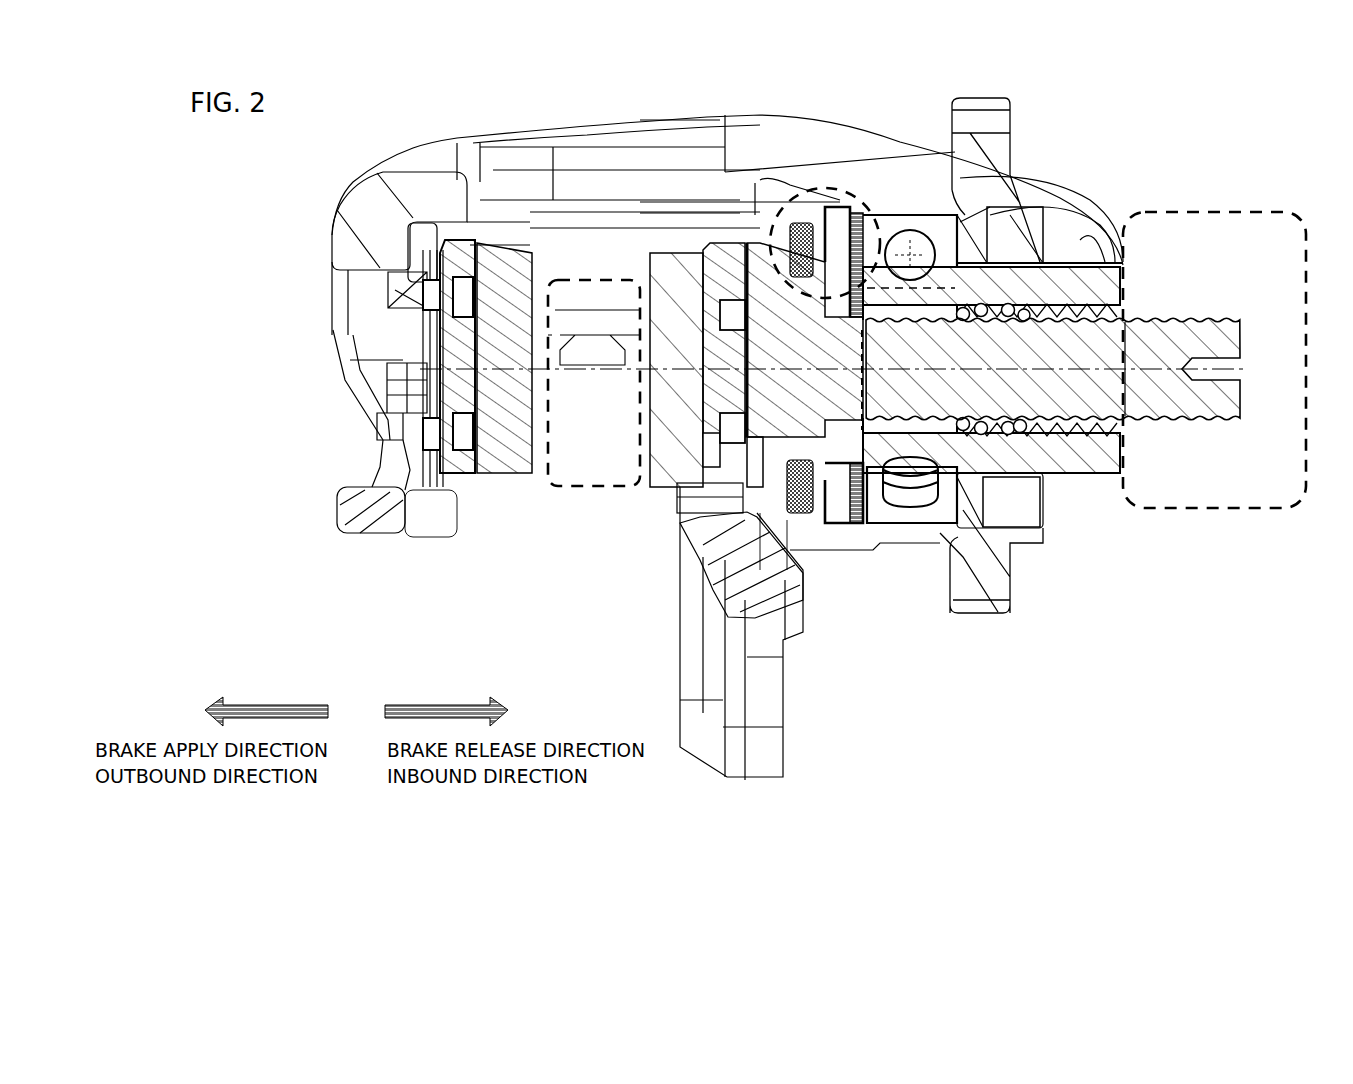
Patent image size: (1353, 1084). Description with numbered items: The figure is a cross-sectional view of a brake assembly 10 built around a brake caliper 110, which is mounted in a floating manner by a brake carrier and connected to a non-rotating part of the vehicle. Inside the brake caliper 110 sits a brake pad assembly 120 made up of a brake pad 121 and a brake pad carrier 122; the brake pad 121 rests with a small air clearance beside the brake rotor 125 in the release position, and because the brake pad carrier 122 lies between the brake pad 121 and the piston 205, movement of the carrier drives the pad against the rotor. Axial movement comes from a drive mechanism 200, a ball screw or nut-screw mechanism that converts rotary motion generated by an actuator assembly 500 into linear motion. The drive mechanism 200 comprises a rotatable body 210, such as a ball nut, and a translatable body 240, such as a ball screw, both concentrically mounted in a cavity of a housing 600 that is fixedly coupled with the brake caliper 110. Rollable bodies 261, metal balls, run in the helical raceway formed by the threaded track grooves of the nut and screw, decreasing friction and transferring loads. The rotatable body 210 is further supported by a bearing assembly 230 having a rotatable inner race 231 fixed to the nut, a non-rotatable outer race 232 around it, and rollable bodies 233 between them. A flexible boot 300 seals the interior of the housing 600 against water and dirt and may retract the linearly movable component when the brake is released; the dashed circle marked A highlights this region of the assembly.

The brake assembly 10 is at (291, 172).
The brake caliper 110 is at (446, 119).
The brake pad assembly 120 is at (633, 567).
The brake pad 121 is at (693, 420).
The brake pad carrier 122 is at (457, 468).
The brake rotor 125 is at (597, 306).
The drive mechanism 200 is at (1189, 431).
The piston 205 is at (780, 437).
The rotatable body 210 is at (1097, 283).
The bearing assembly 230 is at (956, 206).
The rotatable race 231 is at (945, 283).
The non-rotatable race 232 is at (890, 228).
The rollable bodies 233 is at (913, 243).
The translatable body 240 is at (1172, 336).
The rollable bodies 261 is at (1020, 432).
The flexible boot 300 is at (797, 215).
The actuator assembly 500 is at (1222, 510).
The housing 600 is at (965, 538).
The detail region A is at (840, 188).